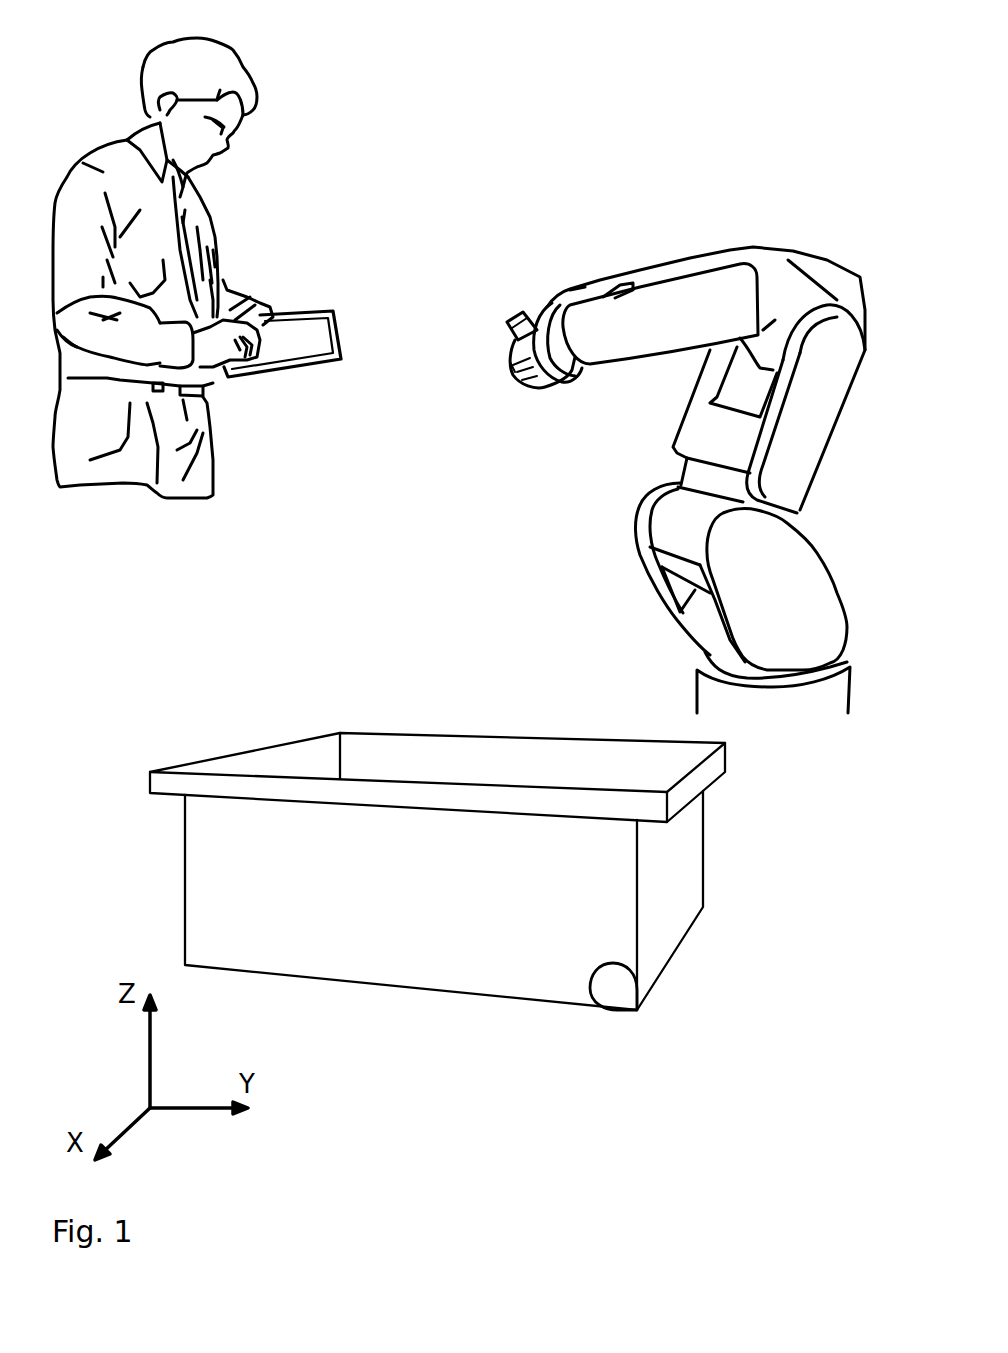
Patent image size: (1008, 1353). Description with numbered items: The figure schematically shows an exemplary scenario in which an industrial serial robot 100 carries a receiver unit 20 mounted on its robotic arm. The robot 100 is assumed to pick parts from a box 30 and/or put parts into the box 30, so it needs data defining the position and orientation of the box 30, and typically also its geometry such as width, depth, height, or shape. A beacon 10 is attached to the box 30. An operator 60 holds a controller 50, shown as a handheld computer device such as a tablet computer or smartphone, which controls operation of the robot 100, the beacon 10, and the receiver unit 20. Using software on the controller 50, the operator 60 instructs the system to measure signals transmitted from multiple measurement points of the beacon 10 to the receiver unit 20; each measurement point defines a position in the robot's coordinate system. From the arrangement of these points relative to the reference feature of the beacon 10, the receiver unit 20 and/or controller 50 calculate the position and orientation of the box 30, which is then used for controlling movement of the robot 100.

The beacon 10 is at (590, 972).
The receiver unit 20 is at (512, 307).
The box 30 is at (667, 965).
The controller 50 is at (333, 320).
The operator 60 is at (240, 50).
The industrial serial robot 100 is at (807, 252).